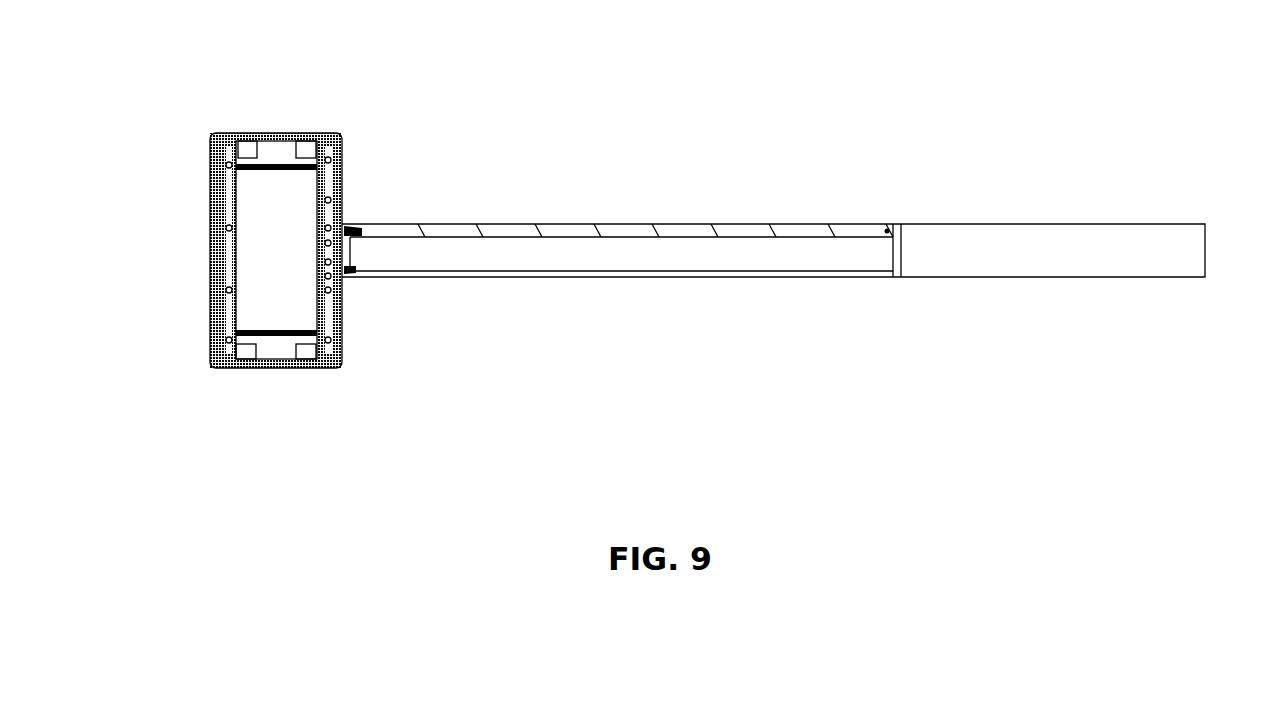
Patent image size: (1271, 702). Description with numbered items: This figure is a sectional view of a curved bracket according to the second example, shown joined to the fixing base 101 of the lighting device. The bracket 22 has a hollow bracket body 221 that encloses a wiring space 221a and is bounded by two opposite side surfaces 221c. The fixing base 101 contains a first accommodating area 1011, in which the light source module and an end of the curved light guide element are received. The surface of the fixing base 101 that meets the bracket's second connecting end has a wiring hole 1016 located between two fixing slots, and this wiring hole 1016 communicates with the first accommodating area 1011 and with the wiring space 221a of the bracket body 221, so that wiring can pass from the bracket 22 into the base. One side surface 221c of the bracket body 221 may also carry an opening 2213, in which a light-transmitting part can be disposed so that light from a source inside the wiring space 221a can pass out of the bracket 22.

The fixing base 101 is at (345, 122).
The first accommodating area 1011 is at (332, 161).
The opening 2213 is at (222, 229).
The wiring hole 1016 is at (342, 283).
The bracket 22 is at (773, 258).
The bracket body 221 is at (1037, 253).
The wiring space 221a is at (655, 258).
The side surface 221c is at (571, 223).